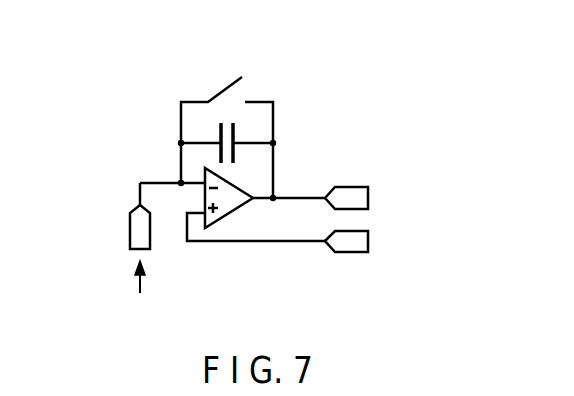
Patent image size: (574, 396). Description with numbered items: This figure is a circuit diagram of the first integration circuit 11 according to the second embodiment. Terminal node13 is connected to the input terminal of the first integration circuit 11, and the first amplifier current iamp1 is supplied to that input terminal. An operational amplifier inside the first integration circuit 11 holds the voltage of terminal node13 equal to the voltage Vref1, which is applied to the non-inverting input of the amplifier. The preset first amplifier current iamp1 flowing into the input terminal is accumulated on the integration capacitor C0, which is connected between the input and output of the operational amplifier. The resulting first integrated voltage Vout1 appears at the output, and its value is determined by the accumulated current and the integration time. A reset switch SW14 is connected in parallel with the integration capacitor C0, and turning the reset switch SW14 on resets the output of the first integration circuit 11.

The first integration circuit 11 is at (133, 103).
The reset switch SW14 is at (230, 88).
The integration capacitor C0 is at (238, 132).
The terminal node node13 is at (147, 250).
The first amplifier current iamp1 is at (135, 289).
The first integrated voltage Vout1 is at (380, 198).
The reference voltage Vref1 is at (380, 241).